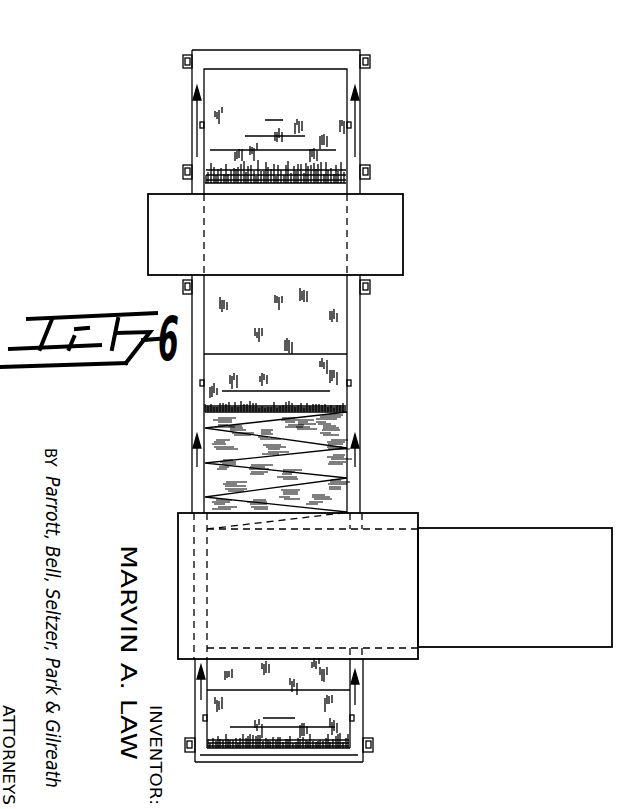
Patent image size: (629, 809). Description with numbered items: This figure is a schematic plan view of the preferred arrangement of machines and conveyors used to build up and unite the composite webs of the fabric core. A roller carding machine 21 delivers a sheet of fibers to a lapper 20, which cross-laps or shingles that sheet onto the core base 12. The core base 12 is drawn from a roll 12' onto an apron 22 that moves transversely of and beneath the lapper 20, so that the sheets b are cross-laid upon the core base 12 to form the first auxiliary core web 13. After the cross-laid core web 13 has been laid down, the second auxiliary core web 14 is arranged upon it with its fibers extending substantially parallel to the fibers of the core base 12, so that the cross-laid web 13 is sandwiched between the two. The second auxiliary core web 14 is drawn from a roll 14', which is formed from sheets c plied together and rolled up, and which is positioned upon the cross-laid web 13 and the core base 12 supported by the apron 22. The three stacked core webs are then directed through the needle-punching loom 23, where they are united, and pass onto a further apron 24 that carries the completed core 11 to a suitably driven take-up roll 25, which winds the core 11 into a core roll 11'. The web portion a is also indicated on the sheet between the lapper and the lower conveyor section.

The completed core 11 is at (275, 103).
The core roll 11' is at (275, 135).
The core base 12 is at (316, 710).
The roll 12' is at (311, 727).
The first auxiliary core web 13 is at (197, 503).
The second auxiliary core web 14 is at (303, 394).
The roll 14' is at (275, 385).
The lapper 20 is at (309, 560).
The roller carding machine 21 is at (516, 561).
The apron 22 is at (355, 762).
The needle-punching loom 23 is at (289, 223).
The apron 24 is at (352, 142).
The take-up roll 25 is at (200, 125).
The web portion a is at (287, 678).
The sheets b is at (330, 430).
The sheets c is at (312, 331).